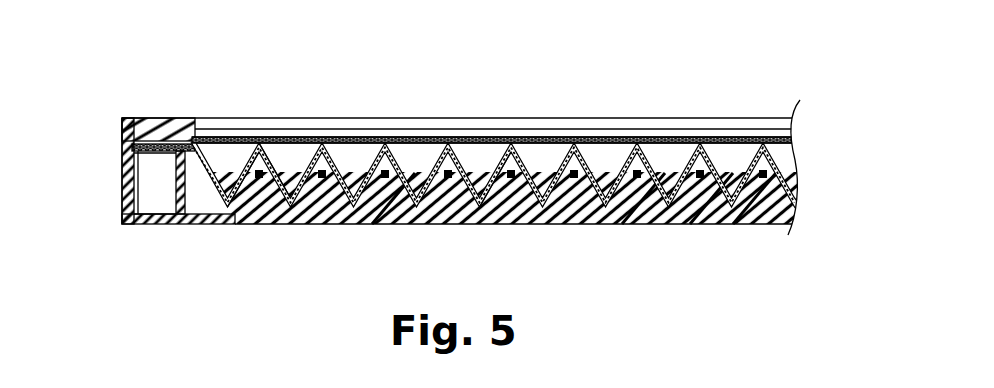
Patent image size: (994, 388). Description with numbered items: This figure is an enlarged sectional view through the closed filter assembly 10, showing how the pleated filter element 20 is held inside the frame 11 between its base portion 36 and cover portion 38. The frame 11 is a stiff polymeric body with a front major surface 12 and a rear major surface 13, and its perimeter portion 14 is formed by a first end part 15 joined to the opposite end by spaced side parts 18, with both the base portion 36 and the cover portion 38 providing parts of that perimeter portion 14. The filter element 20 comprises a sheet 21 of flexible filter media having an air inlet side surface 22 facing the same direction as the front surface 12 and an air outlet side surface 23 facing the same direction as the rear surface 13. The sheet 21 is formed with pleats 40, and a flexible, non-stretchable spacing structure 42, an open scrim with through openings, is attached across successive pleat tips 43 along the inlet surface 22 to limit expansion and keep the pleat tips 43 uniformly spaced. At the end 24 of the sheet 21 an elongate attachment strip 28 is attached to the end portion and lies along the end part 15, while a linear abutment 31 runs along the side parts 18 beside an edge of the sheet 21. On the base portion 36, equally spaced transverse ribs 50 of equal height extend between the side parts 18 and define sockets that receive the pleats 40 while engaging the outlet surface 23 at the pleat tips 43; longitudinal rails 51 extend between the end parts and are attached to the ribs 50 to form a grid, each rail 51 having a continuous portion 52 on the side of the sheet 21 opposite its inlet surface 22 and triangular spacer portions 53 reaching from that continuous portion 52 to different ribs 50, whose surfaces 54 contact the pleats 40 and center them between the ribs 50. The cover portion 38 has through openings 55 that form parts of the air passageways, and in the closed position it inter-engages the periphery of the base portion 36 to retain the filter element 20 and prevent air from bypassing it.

The filter assembly 10 is at (627, 46).
The frame 11 is at (110, 163).
The front major surface 12 is at (170, 118).
The rear major surface 13 is at (225, 223).
The perimeter portion 14 is at (163, 225).
The first end part 15 is at (128, 222).
The side parts 18 is at (724, 157).
The filter element 20 is at (328, 130).
The sheet of filter media 21 is at (252, 183).
The air inlet side surface 22 is at (597, 150).
The air outlet side surface 23 is at (492, 183).
The end of sheet 24 is at (158, 152).
The attachment strip 28 is at (136, 120).
The second linear abutment 31 is at (418, 152).
The base portion 36 is at (567, 226).
The cover portion 38 is at (650, 122).
The pleats 40 is at (780, 164).
The spacing structure 42 is at (531, 138).
The pleat tips 43 is at (662, 158).
The transverse ribs 50 is at (489, 145).
The longitudinal rails 51 is at (387, 219).
The continuous portion 52 is at (753, 212).
The spacer portions 53 is at (697, 197).
The surfaces of spacer portions 54 is at (297, 163).
The through openings 55 is at (243, 119).